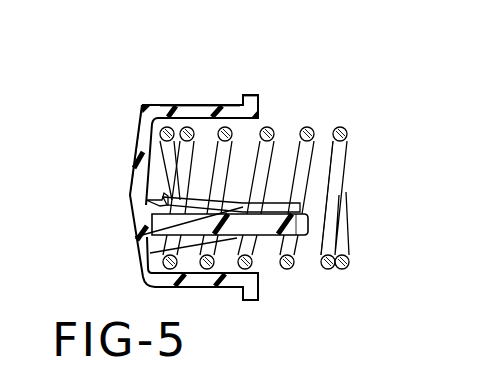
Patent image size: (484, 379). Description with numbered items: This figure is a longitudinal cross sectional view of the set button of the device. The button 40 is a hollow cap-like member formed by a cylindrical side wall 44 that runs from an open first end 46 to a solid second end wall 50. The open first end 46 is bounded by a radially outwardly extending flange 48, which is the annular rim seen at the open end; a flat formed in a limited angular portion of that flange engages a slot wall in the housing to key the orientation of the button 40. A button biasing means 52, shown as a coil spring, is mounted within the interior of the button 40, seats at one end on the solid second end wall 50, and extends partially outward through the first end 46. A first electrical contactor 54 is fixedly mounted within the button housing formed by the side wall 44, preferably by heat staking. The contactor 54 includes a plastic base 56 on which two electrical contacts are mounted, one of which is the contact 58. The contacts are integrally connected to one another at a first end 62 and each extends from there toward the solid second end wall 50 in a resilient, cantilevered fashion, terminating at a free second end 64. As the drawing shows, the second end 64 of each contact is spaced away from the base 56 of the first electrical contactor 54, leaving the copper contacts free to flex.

The button 40 is at (160, 104).
The cylindrical side wall 44 is at (184, 105).
The radially outwardly extending flange 48 is at (246, 90).
The solid second end wall 50 is at (140, 132).
The open first end 46 is at (262, 122).
The button biasing means 52 is at (347, 154).
The first end 62 is at (300, 212).
The plastic base 56 is at (245, 216).
The first electrical contactor 54 is at (296, 236).
The second end 64 is at (160, 196).
The electrical contact 58 is at (140, 234).